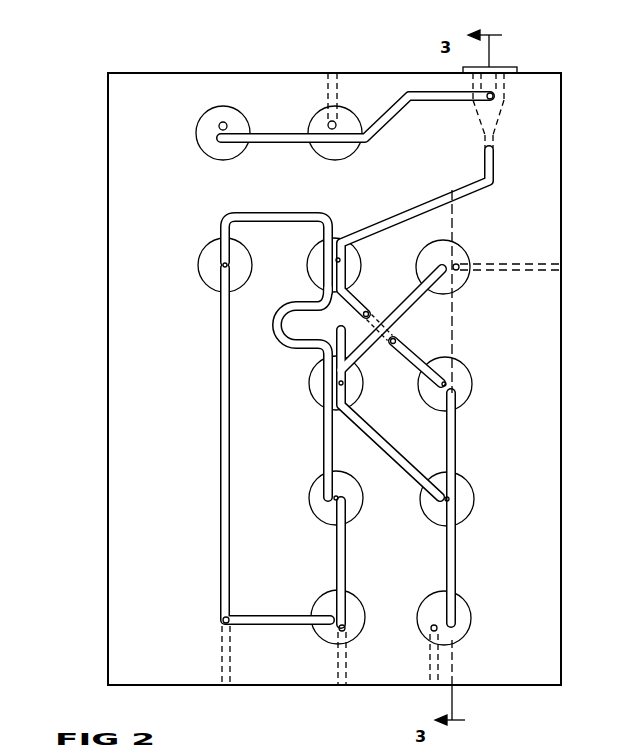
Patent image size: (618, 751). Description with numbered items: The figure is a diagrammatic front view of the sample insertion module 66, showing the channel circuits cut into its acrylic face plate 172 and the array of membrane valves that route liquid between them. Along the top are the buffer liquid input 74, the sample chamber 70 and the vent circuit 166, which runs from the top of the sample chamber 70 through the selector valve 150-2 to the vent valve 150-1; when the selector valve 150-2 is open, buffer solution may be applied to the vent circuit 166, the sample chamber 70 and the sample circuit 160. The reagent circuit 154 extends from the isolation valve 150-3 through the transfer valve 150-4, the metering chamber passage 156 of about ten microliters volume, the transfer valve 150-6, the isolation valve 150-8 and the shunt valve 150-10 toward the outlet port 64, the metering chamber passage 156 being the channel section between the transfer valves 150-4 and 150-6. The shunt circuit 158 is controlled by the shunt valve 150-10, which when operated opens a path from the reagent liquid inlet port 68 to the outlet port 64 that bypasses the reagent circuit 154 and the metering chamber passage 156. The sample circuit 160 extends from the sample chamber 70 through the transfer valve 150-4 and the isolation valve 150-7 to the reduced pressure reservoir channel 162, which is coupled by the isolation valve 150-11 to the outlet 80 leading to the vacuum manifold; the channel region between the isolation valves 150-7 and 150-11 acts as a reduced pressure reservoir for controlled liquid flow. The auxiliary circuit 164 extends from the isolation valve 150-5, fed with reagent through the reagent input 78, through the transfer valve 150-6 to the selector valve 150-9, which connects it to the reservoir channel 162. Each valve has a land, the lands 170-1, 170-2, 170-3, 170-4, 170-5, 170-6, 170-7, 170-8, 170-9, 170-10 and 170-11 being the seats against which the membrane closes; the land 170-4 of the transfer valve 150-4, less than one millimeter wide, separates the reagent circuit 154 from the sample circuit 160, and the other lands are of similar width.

The sample insertion module 66 is at (99, 80).
The buffer liquid input 74 is at (335, 73).
The sample chamber 70 is at (516, 84).
The vent circuit 166 is at (402, 110).
The sample circuit 160 is at (470, 183).
The reagent circuit 154 is at (272, 213).
The metering chamber passage 156 is at (278, 338).
The shunt circuit 158 is at (265, 620).
The auxiliary circuit 164 is at (377, 432).
The reduced pressure reservoir channel 162 is at (457, 440).
The reagent input 78 is at (561, 267).
The reagent liquid inlet port 68 is at (226, 688).
The outlet port 64 is at (340, 688).
The outlet 80 is at (432, 687).
The acrylic face plate 172 is at (533, 687).
The vent valve 150-1 is at (210, 152).
The selector valve 150-2 is at (328, 158).
The isolation valve 150-3 is at (200, 270).
The transfer valve 150-4 is at (307, 272).
The isolation valve 150-5 is at (463, 290).
The transfer valve 150-6 is at (308, 390).
The isolation valve 150-7 is at (462, 365).
The isolation valve 150-8 is at (315, 486).
The selector valve 150-9 is at (475, 498).
The shunt valve 150-10 is at (392, 590).
The isolation valve 150-11 is at (470, 605).
The valve land 170-1 is at (215, 125).
The valve land 170-2 is at (327, 125).
The valve land 170-3 is at (218, 262).
The valve land 170-4 is at (340, 238).
The valve land 170-5 is at (446, 260).
The valve land 170-6 is at (337, 358).
The valve land 170-7 is at (447, 385).
The valve land 170-8 is at (316, 520).
The valve land 170-9 is at (435, 503).
The valve land 170-10 is at (338, 628).
The valve land 170-11 is at (440, 615).